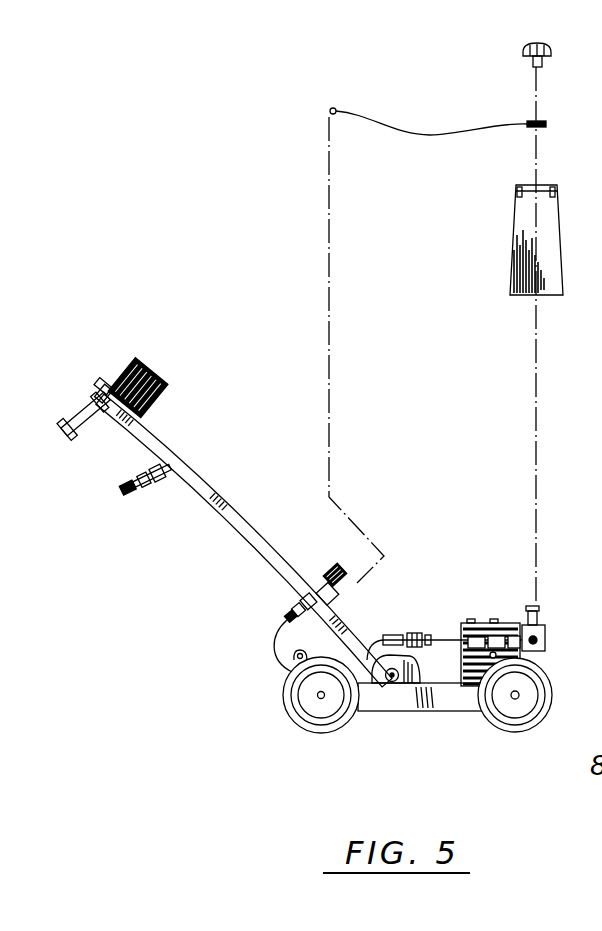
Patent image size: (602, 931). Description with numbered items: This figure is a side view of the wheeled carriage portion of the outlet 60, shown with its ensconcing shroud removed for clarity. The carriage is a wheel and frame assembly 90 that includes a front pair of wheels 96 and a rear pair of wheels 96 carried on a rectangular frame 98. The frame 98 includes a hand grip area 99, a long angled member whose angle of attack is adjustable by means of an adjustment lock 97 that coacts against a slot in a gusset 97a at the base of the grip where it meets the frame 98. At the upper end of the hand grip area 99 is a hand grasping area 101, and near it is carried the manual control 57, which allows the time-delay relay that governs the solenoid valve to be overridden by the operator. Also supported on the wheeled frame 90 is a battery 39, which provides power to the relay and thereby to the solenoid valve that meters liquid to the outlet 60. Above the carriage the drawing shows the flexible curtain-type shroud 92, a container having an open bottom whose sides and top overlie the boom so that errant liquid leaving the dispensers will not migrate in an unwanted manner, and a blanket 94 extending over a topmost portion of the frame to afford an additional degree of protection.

The outlet 60 is at (257, 312).
The manual control 57 is at (105, 384).
The hand grasping area 101 is at (84, 427).
The hand grip area 99 is at (203, 490).
The blanket 94 is at (385, 123).
The curtain-shroud 92 is at (552, 243).
The gusset 97a is at (408, 657).
The battery 39 is at (478, 622).
The wheeled frame 90 is at (258, 672).
The wheels 96 is at (297, 716).
The adjustment lock 97 is at (392, 712).
The rectangular frame 98 is at (452, 713).